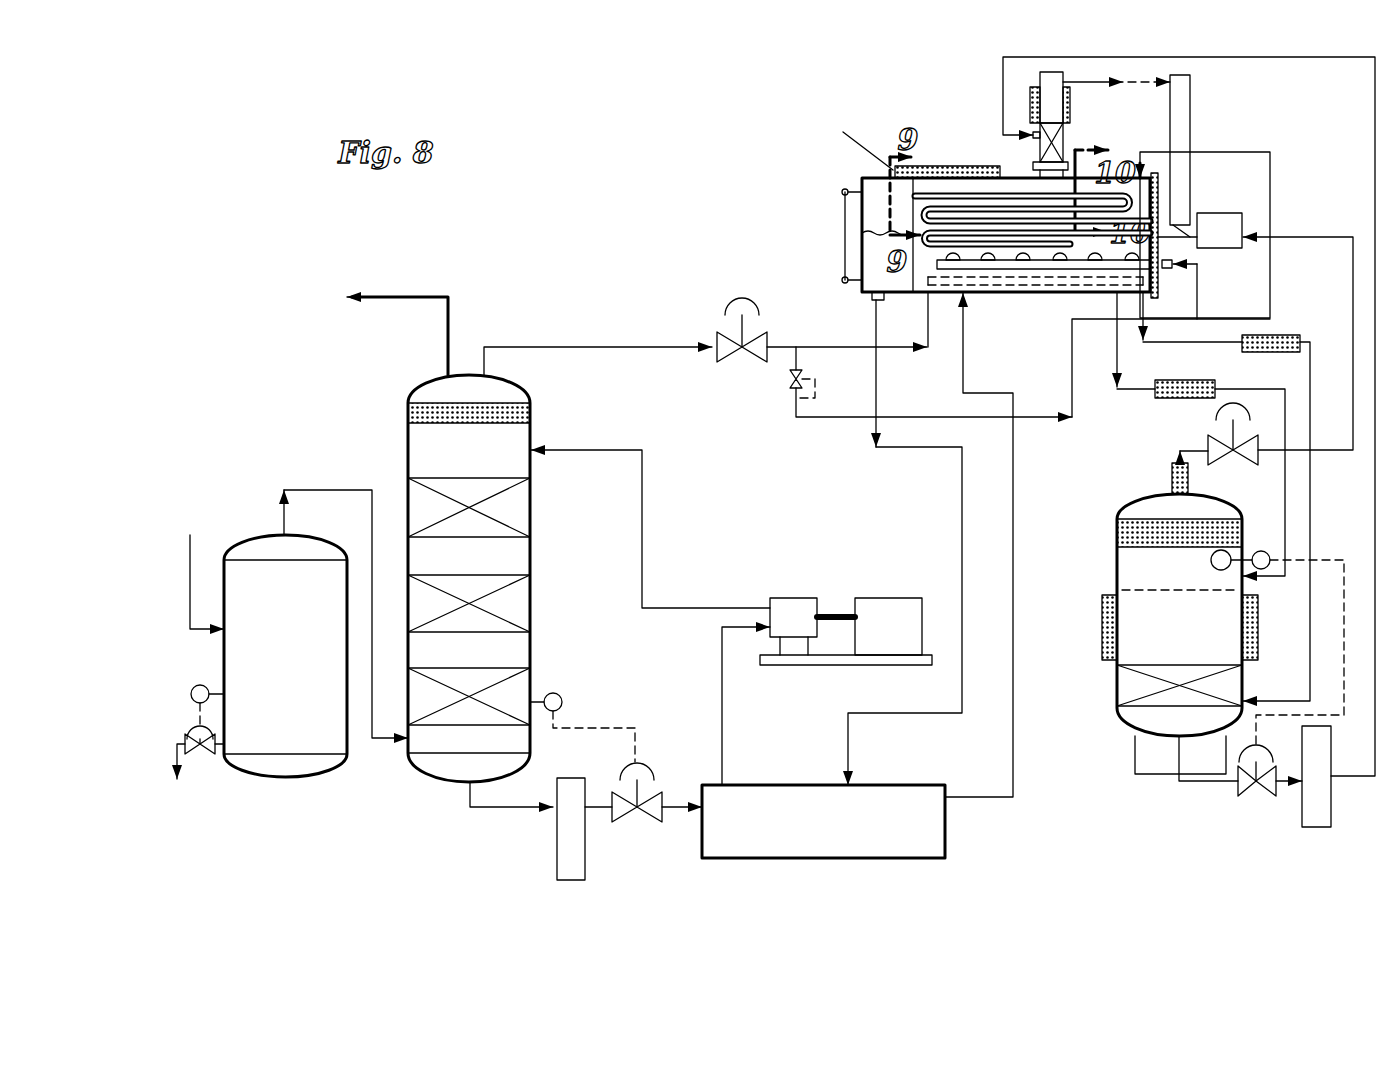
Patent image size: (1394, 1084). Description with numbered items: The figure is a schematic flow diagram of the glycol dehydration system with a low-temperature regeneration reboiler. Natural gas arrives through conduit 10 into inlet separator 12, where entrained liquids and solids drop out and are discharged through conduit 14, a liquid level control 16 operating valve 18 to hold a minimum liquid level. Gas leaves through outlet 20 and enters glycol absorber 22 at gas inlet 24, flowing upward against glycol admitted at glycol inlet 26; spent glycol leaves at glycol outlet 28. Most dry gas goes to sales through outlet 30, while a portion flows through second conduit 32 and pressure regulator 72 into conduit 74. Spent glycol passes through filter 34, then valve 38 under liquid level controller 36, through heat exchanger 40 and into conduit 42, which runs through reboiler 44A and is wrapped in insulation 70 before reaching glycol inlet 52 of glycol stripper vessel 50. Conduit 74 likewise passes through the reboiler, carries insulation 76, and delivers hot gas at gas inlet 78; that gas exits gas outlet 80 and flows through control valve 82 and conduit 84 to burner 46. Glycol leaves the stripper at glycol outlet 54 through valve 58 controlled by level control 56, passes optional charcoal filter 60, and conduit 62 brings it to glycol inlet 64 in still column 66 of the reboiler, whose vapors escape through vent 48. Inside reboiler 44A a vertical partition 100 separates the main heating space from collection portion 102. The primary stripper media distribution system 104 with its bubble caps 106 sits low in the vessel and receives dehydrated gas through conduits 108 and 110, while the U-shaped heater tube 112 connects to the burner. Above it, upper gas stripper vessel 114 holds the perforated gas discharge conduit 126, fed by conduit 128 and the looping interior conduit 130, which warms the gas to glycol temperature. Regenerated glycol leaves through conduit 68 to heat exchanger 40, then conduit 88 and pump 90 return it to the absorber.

The conduit 10 is at (190, 580).
The inlet separator 12 is at (256, 535).
The conduit 14 is at (164, 760).
The liquid level control 16 is at (193, 686).
The valve 18 is at (225, 750).
The outlet 20 is at (290, 515).
The glycol absorber 22 is at (407, 458).
The gas inlet 24 is at (381, 742).
The glycol inlet 26 is at (565, 451).
The glycol outlet 28 is at (466, 798).
The outlet 30 is at (447, 352).
The second conduit 32 is at (597, 345).
The filter 34 is at (571, 797).
The liquid level controller 36 is at (555, 692).
The valve 38 is at (652, 806).
The heat exchanger 40 is at (750, 785).
The conduit 42 is at (1075, 292).
The reboiler 44A is at (875, 193).
The burner 46 is at (1212, 222).
The vent 48 is at (1182, 133).
The glycol stripper vessel 50 is at (1117, 573).
The glycol inlet 52 is at (1267, 574).
The glycol outlet 54 is at (1178, 762).
The level control 56 is at (1261, 549).
The valve 58 is at (1252, 788).
The charcoal filter 60 is at (1320, 793).
The conduit 62 is at (1185, 57).
The glycol inlet 64 is at (1028, 136).
The still column 66 is at (1055, 110).
The conduit 68 is at (872, 425).
The insulation 70 is at (1165, 380).
The pressure regulator 72 is at (745, 355).
The conduit 74 is at (826, 345).
The insulation 76 is at (1274, 336).
The gas inlet 78 is at (1296, 700).
The gas outlet 80 is at (1172, 478).
The control valve 82 is at (1216, 444).
The conduit 84 is at (1290, 237).
The conduit 88 is at (720, 682).
The pump 90 is at (787, 608).
The vertical partition 100 is at (913, 198).
The collection portion 102 is at (873, 272).
The primary stripper media distribution system 104 is at (1100, 268).
The bubble caps 106 is at (977, 262).
The conduit 108 is at (800, 420).
The conduit 110 is at (1200, 298).
The heater tube 112 is at (905, 294).
The upper gas stripper vessel 114 is at (936, 193).
The gas discharge conduit 126 is at (1160, 182).
The conduit 128 is at (1270, 164).
The interior conduit 130 is at (1145, 212).